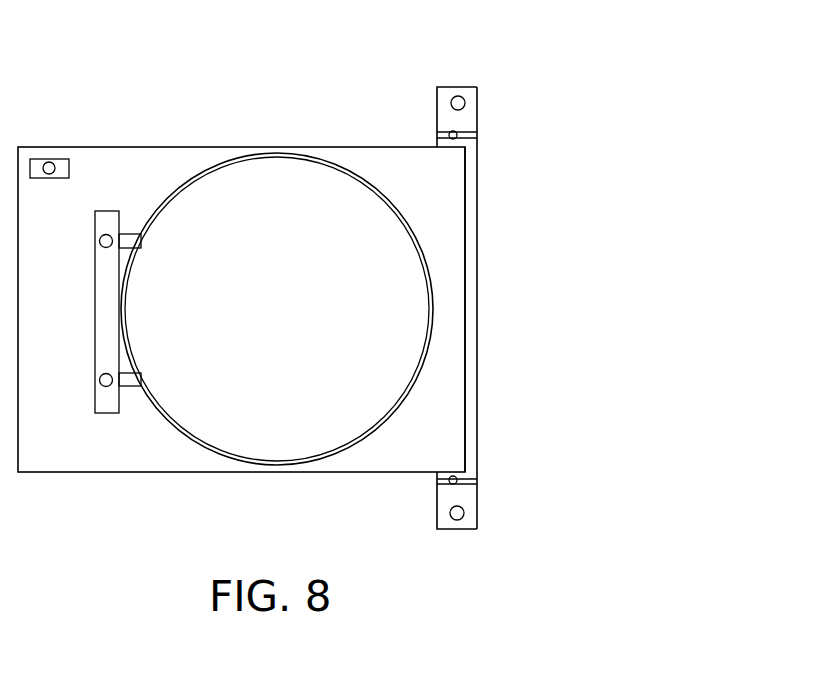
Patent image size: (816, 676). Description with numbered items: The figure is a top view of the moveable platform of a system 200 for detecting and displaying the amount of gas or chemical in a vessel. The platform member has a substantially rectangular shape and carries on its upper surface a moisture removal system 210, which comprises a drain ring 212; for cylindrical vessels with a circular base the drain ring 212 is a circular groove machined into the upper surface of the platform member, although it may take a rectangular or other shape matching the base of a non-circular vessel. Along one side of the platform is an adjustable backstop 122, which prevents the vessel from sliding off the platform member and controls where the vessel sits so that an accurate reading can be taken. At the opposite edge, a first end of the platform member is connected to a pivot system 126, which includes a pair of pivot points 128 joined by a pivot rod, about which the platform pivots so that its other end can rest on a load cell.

The rotor assembly 200 is at (289, 92).
The moisture removal system 210 is at (438, 234).
The drain ring 212 is at (290, 152).
The adjustable backstop 122 is at (109, 415).
The pivot system 126 is at (463, 87).
The pivot points 128 is at (477, 481).